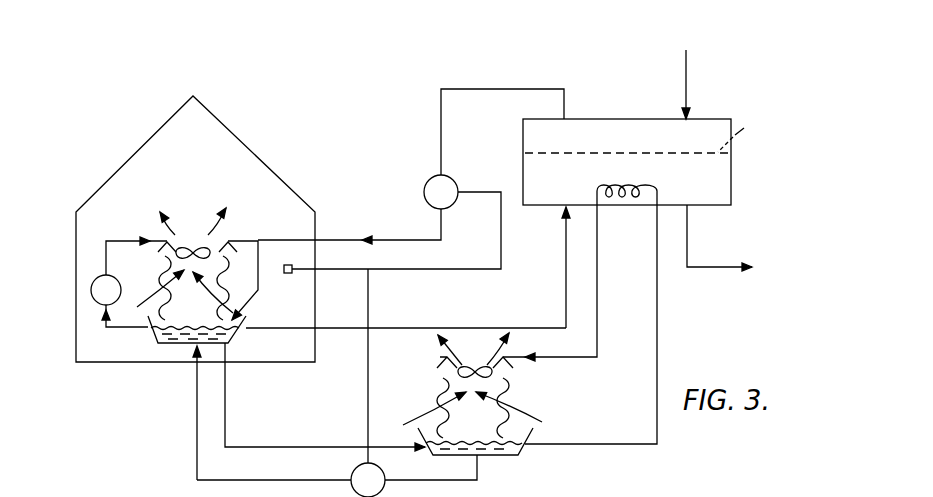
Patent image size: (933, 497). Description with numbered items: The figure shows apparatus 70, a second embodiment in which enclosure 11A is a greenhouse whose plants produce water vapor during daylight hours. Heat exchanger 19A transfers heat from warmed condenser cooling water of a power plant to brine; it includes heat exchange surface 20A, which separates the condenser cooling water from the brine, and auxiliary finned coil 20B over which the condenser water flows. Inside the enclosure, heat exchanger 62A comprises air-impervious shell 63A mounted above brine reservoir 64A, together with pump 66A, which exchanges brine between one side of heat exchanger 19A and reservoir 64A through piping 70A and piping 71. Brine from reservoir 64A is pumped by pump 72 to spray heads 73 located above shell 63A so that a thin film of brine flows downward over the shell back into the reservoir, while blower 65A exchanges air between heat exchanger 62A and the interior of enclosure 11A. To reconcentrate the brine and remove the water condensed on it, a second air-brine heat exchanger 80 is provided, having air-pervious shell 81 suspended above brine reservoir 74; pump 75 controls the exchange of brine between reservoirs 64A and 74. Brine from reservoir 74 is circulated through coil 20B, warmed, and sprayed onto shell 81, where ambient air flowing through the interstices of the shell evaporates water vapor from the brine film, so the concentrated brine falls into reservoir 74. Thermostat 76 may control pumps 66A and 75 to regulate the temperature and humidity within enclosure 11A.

The apparatus 70 is at (260, 123).
The piping 70A is at (491, 88).
The enclosure 11A is at (105, 185).
The pump 72 is at (99, 278).
The spray heads 73 is at (233, 243).
The blower 65A is at (193, 246).
The air-impervious shell 63A is at (175, 286).
The brine reservoir 64A is at (236, 338).
The heat exchanger 62A is at (120, 318).
The thermostat 76 is at (288, 275).
The pump 66A is at (430, 178).
The heat exchanger 19A is at (626, 118).
The heat exchange surface 20A is at (530, 152).
The auxiliary finned coil 20B is at (629, 206).
The second air-brine heat exchanger 80 is at (525, 398).
The piping 71 is at (425, 328).
The pump 75 is at (485, 366).
The air-pervious shell 81 is at (440, 393).
The brine reservoir 74 is at (508, 449).